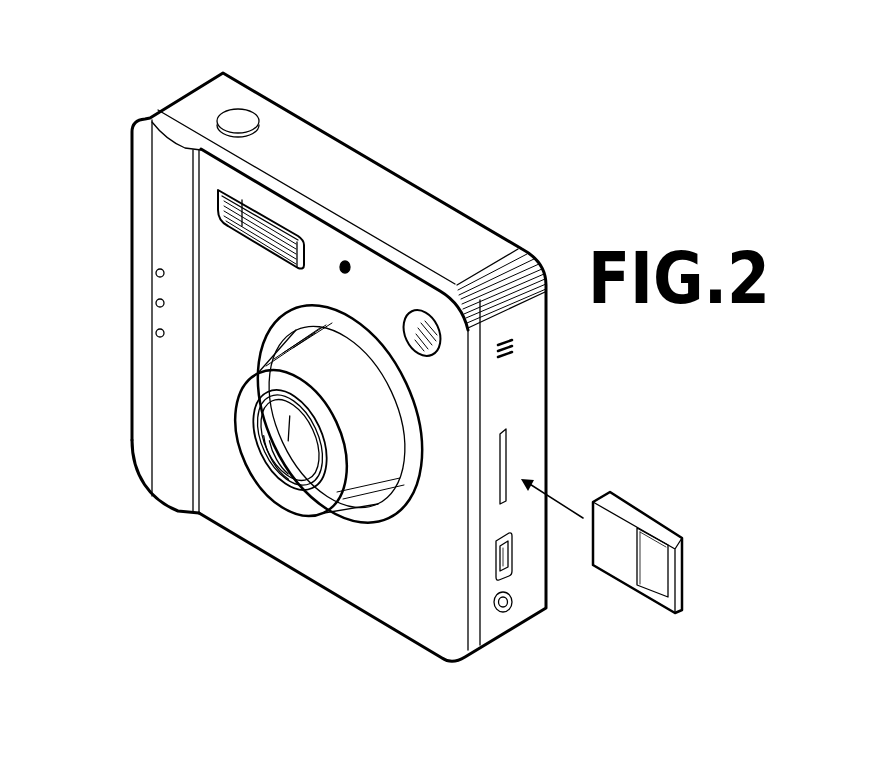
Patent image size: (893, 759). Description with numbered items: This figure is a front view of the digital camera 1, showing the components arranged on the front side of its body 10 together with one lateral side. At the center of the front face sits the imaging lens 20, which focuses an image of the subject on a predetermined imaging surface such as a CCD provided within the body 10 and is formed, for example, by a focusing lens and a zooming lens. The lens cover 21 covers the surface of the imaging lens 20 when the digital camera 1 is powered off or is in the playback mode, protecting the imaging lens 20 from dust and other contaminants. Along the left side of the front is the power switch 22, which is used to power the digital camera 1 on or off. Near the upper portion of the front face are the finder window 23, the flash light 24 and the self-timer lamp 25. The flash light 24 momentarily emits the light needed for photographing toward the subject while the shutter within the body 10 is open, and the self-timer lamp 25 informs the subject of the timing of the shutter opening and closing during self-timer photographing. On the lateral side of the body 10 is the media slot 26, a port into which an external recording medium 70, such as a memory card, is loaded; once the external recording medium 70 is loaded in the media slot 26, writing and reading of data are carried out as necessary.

The digital camera 1 is at (349, 88).
The body 10 is at (373, 170).
The imaging lens 20 is at (278, 468).
The lens cover 21 is at (310, 487).
The power switch 22 is at (160, 432).
The finder window 23 is at (438, 350).
The flash light 24 is at (218, 205).
The self-timer lamp 25 is at (163, 295).
The media slot 26 is at (503, 448).
The external recording medium 70 is at (678, 578).